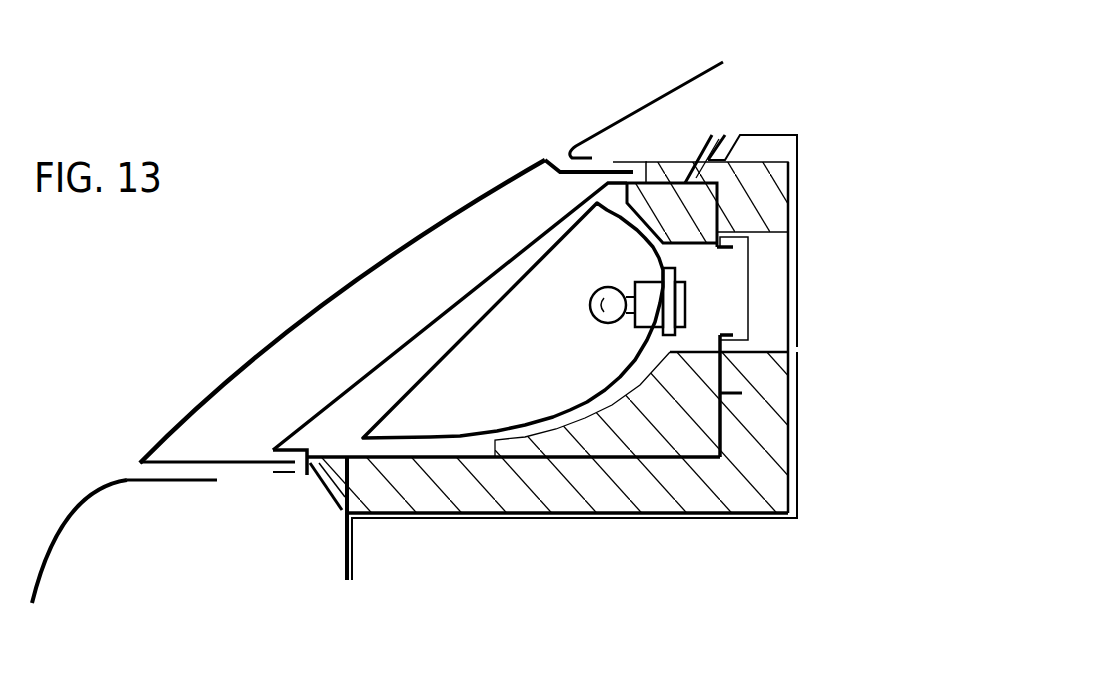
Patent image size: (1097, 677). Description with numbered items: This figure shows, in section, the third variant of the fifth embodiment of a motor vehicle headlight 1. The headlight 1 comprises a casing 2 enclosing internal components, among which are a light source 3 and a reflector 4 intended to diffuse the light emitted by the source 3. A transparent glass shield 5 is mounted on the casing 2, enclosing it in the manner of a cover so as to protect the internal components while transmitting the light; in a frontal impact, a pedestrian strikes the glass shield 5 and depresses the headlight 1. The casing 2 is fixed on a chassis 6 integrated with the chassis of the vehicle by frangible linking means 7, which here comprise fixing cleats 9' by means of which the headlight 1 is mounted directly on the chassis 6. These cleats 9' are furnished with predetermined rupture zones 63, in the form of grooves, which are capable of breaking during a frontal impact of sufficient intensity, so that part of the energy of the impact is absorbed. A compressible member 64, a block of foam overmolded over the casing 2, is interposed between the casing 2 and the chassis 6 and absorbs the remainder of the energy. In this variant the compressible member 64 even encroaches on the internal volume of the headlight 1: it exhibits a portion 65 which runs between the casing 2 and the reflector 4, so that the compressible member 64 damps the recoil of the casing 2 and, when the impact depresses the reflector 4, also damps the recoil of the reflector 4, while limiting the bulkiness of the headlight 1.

The motor vehicle headlight 1 is at (313, 220).
The casing 2 is at (358, 457).
The light source 3 is at (588, 303).
The reflector 4 is at (553, 412).
The transparent glass shield 5 is at (225, 376).
The chassis 6 is at (790, 128).
The frangible linking means 7 is at (704, 128).
The fixing cleats 9' is at (495, 341).
The predetermined rupture zones 63 is at (727, 133).
The compressible member 64 is at (764, 222).
The portion of the compressible member 65 is at (688, 356).